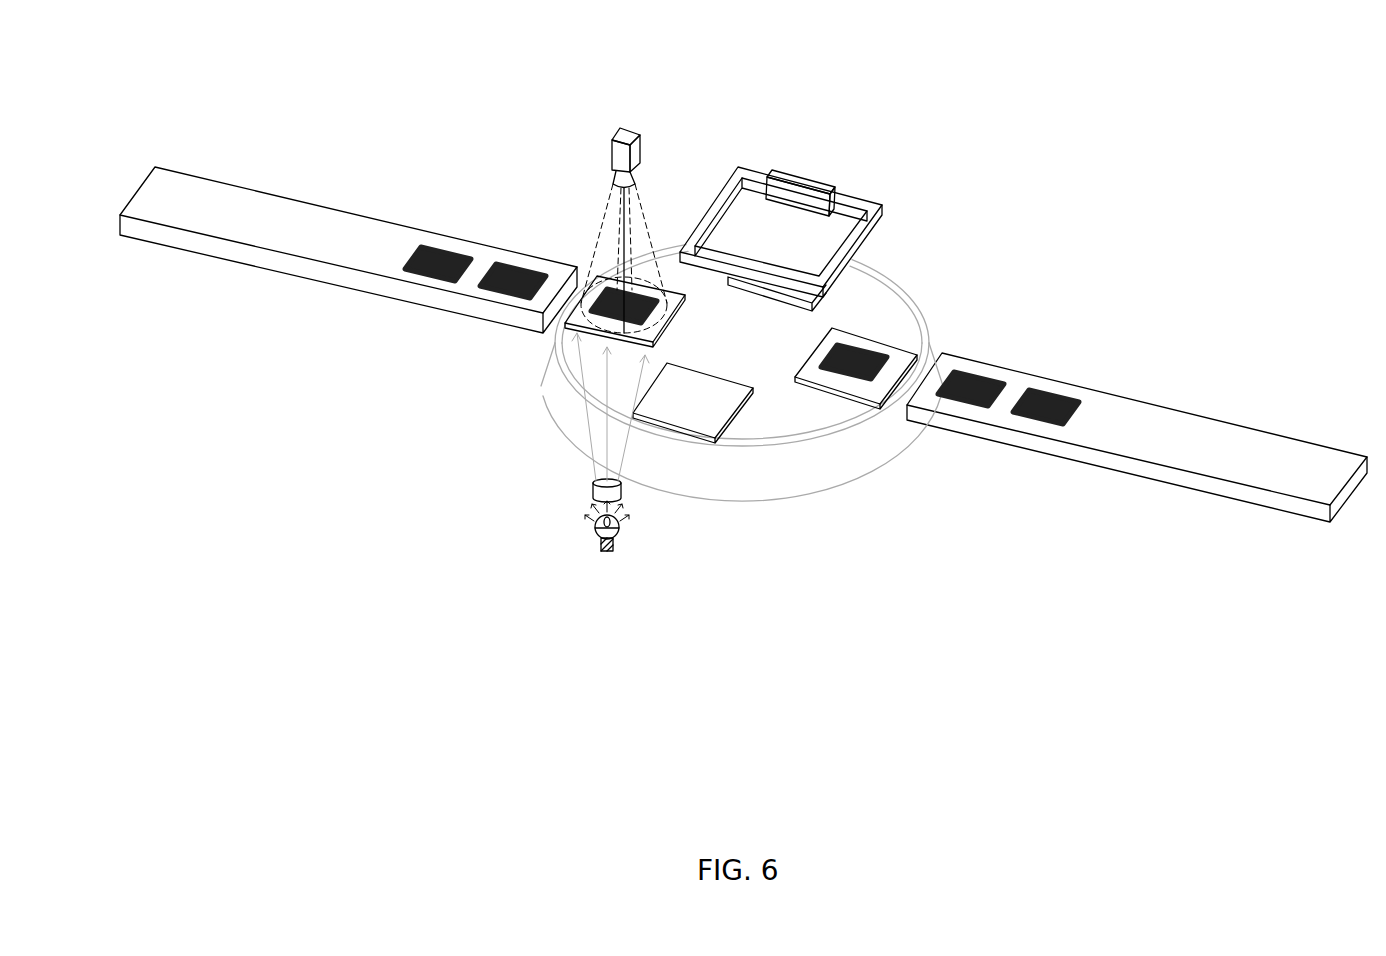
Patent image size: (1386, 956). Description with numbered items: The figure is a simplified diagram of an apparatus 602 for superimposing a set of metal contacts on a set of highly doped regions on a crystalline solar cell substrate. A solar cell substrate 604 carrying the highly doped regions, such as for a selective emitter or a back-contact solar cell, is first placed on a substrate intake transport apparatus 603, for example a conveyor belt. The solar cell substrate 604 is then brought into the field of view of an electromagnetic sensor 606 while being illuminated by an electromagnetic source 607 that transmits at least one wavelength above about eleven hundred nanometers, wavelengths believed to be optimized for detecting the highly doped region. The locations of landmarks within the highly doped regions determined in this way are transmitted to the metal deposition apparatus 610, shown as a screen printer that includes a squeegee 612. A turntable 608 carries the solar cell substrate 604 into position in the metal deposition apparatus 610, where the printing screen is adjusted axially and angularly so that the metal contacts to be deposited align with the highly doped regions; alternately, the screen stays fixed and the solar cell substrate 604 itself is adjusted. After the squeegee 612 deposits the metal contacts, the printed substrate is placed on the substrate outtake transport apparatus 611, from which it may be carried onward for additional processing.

The inspection system 602 is at (978, 112).
The substrate intake transport apparatus 603 is at (215, 192).
The solar cell substrate 604 is at (433, 247).
The electromagnetic sensor 606 is at (612, 152).
The electromagnetic source 607 is at (594, 530).
The turntable 608 is at (905, 303).
The metal deposition apparatus 610 is at (870, 230).
The substrate outtake transport apparatus 611 is at (1260, 447).
The squeegee 612 is at (797, 178).